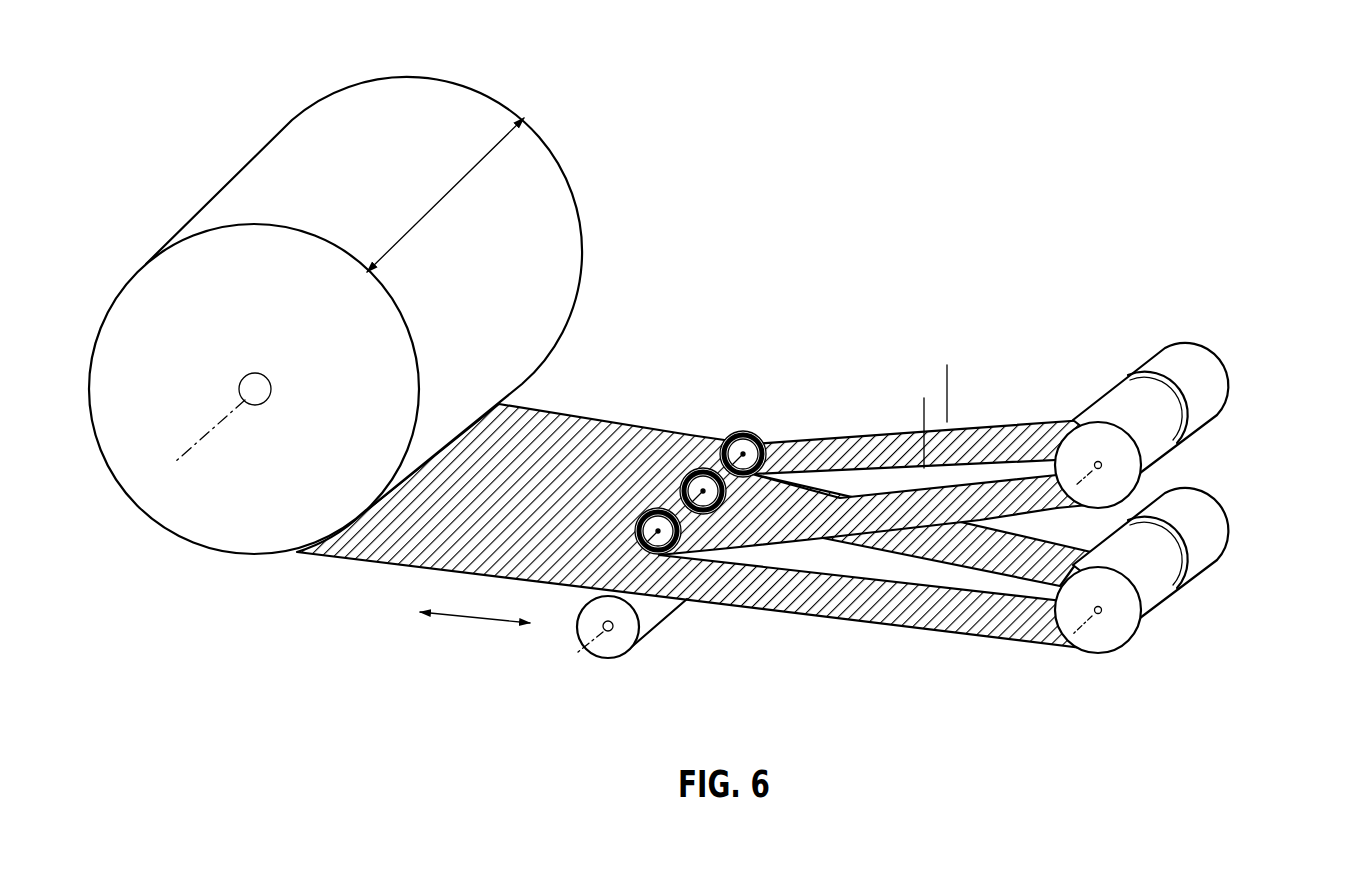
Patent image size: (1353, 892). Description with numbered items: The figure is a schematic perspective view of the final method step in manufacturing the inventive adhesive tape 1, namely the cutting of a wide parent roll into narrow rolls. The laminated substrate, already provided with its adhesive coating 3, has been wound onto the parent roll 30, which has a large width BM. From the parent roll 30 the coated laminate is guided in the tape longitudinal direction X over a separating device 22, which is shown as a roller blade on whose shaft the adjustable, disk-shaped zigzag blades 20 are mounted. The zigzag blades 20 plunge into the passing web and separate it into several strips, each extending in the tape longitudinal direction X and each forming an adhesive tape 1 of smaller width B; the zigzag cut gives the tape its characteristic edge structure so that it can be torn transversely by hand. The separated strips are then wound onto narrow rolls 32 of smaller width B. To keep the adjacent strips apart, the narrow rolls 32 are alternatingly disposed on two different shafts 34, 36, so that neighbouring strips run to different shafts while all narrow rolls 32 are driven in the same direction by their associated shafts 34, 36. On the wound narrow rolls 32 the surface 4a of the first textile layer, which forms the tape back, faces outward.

The adhesive tape 1 is at (868, 622).
The adhesive coating 3 is at (528, 467).
The zigzag blade 20 is at (641, 510).
The separating device 22 is at (668, 632).
The parent roll 30 is at (252, 482).
The narrow rolls 32 is at (1105, 640).
The shaft 34 is at (1102, 465).
The shaft 36 is at (1102, 611).
The surface of the first textile layer 4a is at (1174, 364).
The large width BM is at (437, 205).
The smaller width B is at (946, 370).
The tape longitudinal direction X is at (470, 617).